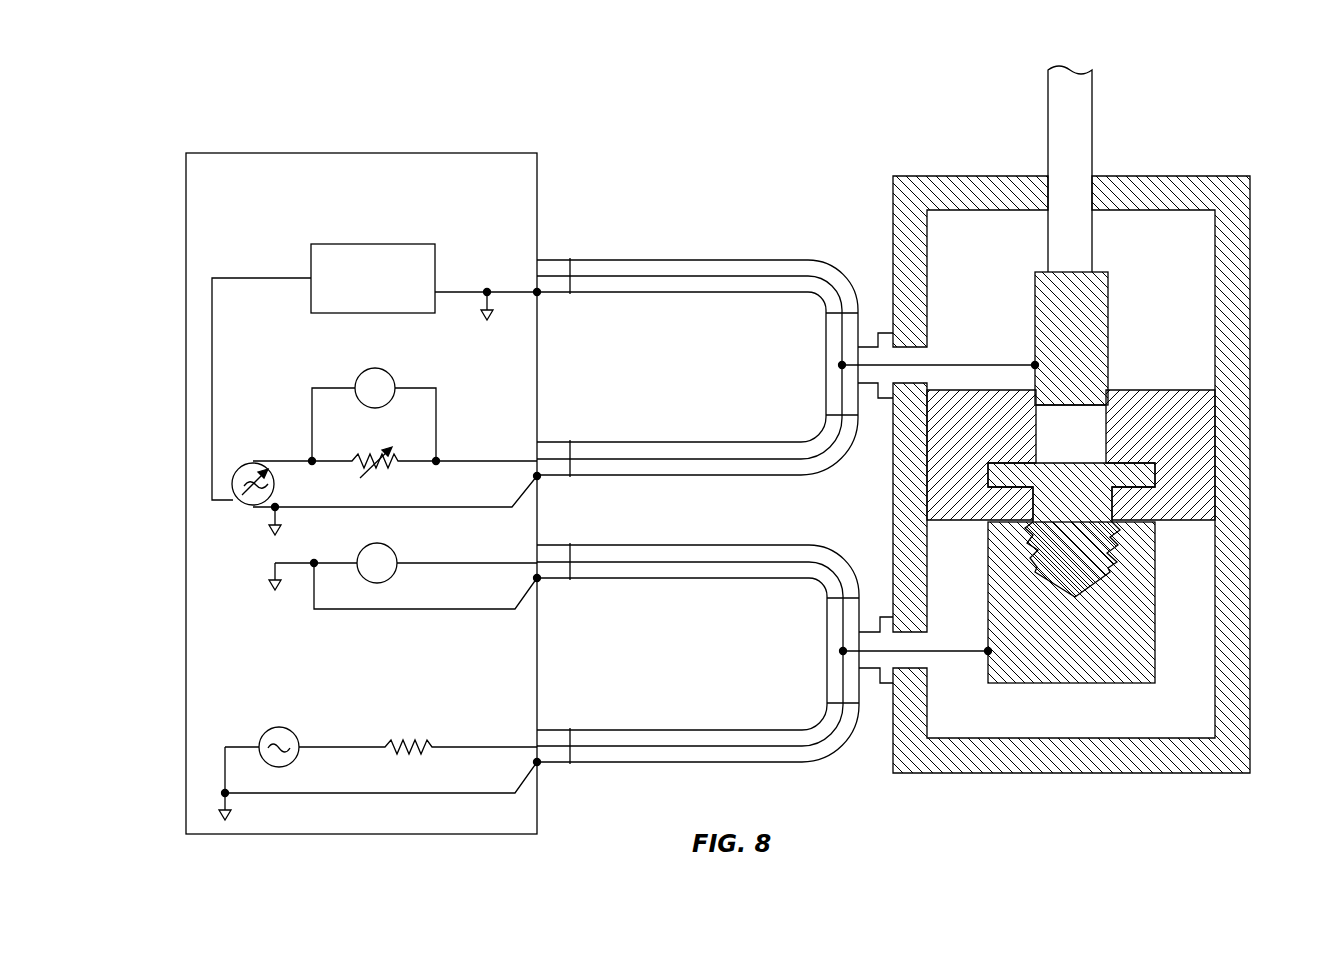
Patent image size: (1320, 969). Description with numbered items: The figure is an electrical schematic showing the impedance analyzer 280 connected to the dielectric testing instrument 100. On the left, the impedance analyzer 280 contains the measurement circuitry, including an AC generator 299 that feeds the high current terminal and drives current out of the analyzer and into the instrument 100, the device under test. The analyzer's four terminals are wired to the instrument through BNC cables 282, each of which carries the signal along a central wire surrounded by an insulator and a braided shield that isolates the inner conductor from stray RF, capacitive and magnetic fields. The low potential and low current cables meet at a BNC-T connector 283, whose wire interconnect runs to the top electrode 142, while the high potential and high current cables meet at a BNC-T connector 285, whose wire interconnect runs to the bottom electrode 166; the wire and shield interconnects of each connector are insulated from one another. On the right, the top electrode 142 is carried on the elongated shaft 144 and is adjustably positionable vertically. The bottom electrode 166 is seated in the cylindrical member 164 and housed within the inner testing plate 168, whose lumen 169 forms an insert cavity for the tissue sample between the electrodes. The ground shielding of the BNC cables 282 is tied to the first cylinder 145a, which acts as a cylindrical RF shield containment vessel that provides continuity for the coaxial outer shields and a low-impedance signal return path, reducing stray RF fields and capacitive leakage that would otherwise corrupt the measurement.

The instrument 100 is at (991, 123).
The top electrode 142 is at (1109, 337).
The elongated shaft 144 is at (1093, 163).
The first cylinder 145a is at (1220, 176).
The cylindrical member 164 is at (1160, 612).
The bottom electrode 166 is at (1033, 457).
The inner testing plate 168 is at (1200, 390).
The lumen 169 is at (1086, 435).
The impedance analyzer 280 is at (214, 152).
The BNC cables 282 is at (648, 292).
The BNC-T connector 283 is at (886, 330).
The BNC-T connector 285 is at (888, 617).
The AC generator 299 is at (282, 708).